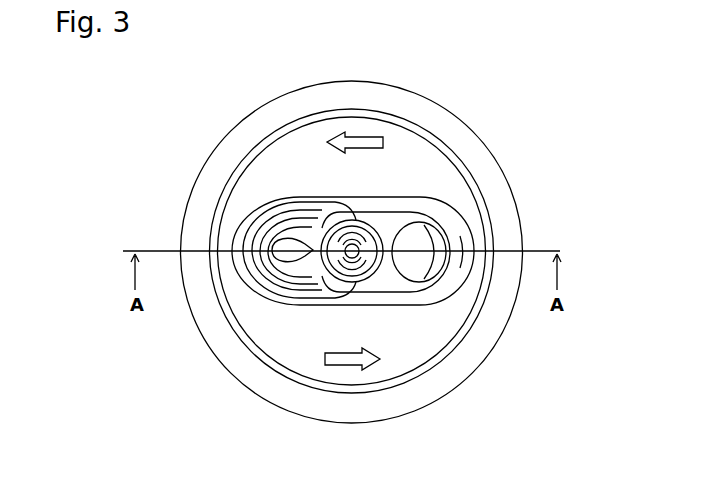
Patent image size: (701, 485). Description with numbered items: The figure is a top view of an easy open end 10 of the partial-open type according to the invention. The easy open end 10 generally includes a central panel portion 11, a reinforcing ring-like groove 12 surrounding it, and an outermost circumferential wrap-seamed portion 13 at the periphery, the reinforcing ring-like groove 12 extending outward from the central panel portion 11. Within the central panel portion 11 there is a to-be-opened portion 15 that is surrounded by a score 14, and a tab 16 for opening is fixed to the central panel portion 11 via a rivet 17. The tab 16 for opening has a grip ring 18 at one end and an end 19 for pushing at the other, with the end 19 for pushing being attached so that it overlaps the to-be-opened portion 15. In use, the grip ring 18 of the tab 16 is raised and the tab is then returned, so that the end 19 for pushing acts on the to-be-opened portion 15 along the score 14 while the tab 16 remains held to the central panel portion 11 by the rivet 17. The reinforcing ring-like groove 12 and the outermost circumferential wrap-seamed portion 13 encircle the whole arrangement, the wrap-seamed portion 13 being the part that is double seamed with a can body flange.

The easy open end 10 is at (495, 110).
The central panel portion 11 is at (303, 137).
The reinforcing ring-like groove 12 is at (243, 157).
The outermost circumferential wrap-seamed portion 13 is at (203, 168).
The score 14 is at (253, 286).
The to-be-opened portion 15 is at (268, 298).
The tab for opening 16 is at (383, 281).
The rivet 17 is at (405, 224).
The grip ring 18 is at (428, 279).
The end for pushing 19 is at (287, 242).